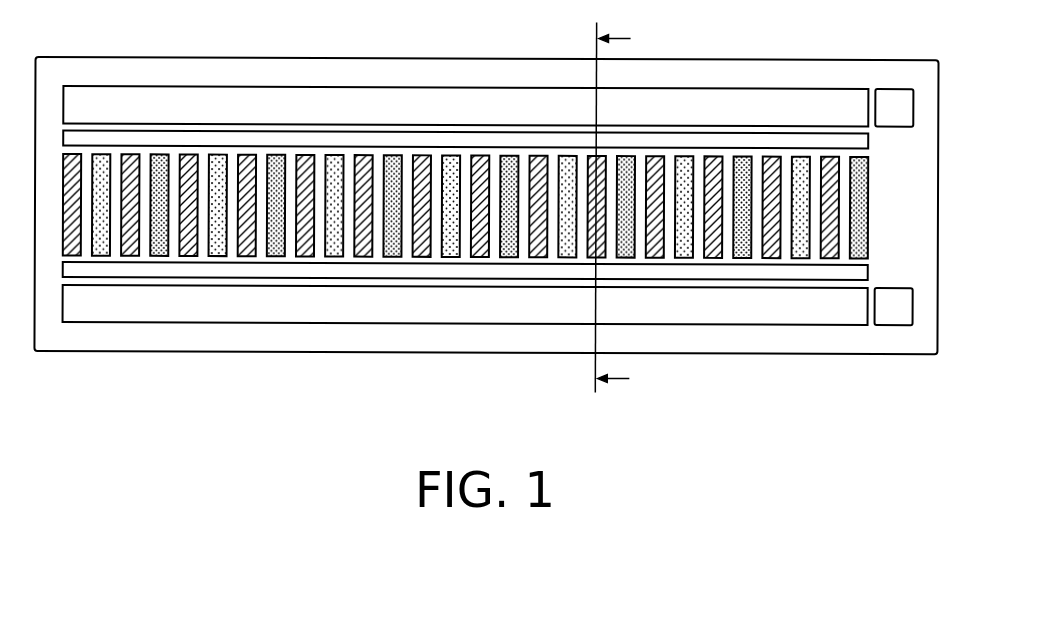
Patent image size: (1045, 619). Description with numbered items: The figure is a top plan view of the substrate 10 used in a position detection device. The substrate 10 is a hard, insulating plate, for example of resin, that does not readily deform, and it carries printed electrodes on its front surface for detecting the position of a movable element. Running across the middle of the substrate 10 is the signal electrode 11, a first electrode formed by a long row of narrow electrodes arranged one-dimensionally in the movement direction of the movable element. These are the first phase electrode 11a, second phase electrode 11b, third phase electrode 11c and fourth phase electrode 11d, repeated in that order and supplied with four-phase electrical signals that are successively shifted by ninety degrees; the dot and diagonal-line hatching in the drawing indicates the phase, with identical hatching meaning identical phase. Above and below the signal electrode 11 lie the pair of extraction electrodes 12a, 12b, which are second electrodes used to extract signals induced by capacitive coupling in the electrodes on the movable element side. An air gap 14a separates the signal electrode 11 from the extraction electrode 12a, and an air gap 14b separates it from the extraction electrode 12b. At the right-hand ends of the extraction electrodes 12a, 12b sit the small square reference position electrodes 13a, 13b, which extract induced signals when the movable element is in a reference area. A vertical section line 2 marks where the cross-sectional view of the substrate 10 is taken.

The substrate 10 is at (775, 60).
The line 2- 2 is at (624, 207).
The signal electrode 11 is at (465, 298).
The first phase electrode 11a is at (72, 258).
The second phase electrode 11b is at (101, 258).
The third phase electrode 11c is at (130, 258).
The fourth phase electrode 11d is at (160, 258).
The extraction electrode 12a is at (98, 87).
The extraction electrode 12b is at (811, 327).
The reference position electrode 13a is at (893, 90).
The reference position electrode 13b is at (894, 327).
The air gap 14a is at (868, 140).
The air gap 14b is at (868, 270).